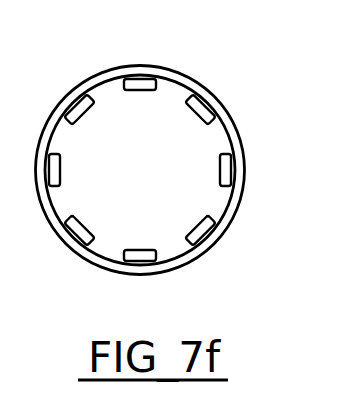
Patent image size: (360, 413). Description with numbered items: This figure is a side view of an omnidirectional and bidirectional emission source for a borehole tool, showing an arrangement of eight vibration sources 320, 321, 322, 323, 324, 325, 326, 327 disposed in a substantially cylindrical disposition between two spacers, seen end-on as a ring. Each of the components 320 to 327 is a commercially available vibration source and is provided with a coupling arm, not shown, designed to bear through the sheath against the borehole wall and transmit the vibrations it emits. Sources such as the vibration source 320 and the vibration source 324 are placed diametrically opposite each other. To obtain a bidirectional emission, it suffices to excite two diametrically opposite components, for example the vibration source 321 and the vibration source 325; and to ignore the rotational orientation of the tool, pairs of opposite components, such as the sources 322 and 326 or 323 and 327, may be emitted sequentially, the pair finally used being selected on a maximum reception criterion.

The vibration source 320 is at (145, 81).
The vibration source 321 is at (202, 107).
The vibration source 322 is at (233, 167).
The vibration source 323 is at (214, 243).
The vibration source 324 is at (137, 255).
The vibration source 325 is at (72, 227).
The vibration source 326 is at (52, 165).
The vibration source 327 is at (77, 107).